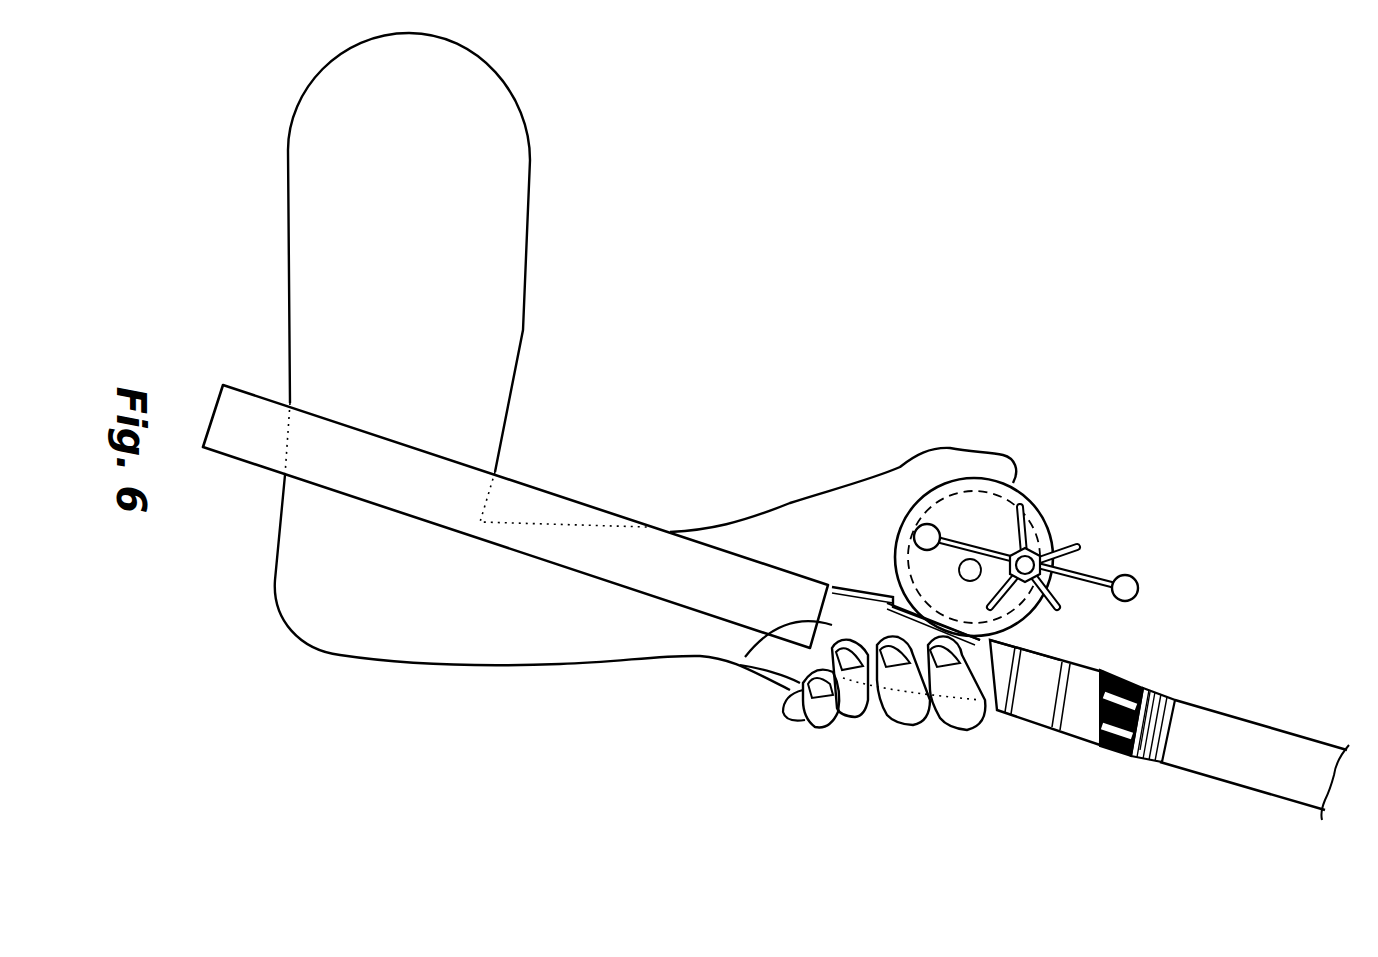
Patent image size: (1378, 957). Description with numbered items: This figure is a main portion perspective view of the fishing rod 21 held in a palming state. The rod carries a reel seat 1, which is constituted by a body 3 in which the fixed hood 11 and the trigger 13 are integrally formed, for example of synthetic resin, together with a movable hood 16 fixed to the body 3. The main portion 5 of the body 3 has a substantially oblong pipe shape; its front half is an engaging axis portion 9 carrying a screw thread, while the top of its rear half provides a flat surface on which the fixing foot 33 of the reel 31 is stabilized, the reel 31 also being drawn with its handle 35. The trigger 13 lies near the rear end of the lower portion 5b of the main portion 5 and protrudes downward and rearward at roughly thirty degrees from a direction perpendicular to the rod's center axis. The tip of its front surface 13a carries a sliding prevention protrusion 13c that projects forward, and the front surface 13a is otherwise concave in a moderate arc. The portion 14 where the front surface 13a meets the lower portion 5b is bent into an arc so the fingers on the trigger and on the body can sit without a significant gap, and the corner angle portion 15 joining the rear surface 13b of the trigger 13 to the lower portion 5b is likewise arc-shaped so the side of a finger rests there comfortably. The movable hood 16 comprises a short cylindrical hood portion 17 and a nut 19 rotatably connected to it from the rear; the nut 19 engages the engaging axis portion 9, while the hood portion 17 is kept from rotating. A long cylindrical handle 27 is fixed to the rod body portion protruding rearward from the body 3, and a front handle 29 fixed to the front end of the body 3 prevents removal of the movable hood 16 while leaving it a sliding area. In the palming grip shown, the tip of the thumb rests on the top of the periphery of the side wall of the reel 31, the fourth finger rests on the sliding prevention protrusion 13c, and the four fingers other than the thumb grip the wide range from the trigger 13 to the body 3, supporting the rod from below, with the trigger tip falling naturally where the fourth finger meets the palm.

The reel seat 1 is at (1138, 628).
The body 3 is at (993, 712).
The main portion 5 is at (817, 620).
The lower portion 5b is at (933, 727).
The engaging axis portion 9 is at (1167, 697).
The fixed hood 11 is at (848, 585).
The trigger 13 is at (783, 718).
The front surface 13a is at (833, 727).
The rear surface 13b is at (778, 700).
The sliding prevention protrusion 13c is at (818, 730).
The connecting portion 14 is at (865, 727).
The corner angle portion 15 is at (800, 673).
The movable hood 16 is at (1185, 797).
The hood portion 17 is at (1038, 713).
The nut 19 is at (1102, 748).
The fishing rod 21 is at (606, 596).
The handle 27 is at (555, 507).
The front handle 29 is at (1290, 747).
The reel 31 is at (1037, 505).
The fixing foot 33 is at (1023, 640).
The reel handle 35 is at (1023, 483).